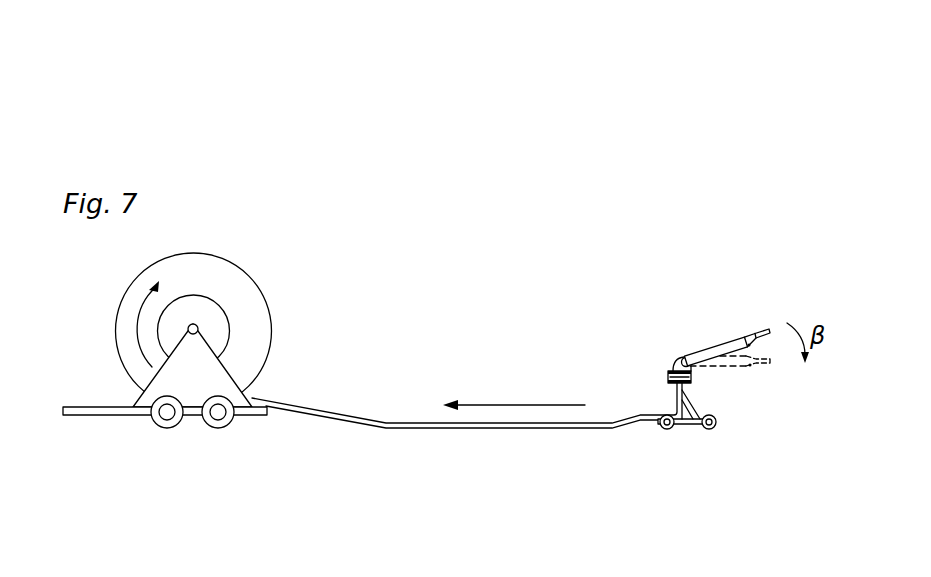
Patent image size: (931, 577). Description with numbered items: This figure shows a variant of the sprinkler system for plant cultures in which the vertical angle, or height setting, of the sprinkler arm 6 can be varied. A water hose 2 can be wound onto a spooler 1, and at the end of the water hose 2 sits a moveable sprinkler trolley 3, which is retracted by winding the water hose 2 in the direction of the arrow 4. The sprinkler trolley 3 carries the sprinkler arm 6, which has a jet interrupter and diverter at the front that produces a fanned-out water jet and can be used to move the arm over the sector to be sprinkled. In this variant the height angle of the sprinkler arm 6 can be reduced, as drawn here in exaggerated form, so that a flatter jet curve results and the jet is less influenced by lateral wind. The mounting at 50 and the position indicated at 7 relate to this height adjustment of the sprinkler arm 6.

The spooler 1 is at (237, 293).
The water hose 2 is at (343, 417).
The sprinkler trolley 3 is at (686, 441).
The arrow 4 is at (495, 403).
The sprinkler arm 6 is at (729, 344).
The arm in pivoted position 7 is at (733, 350).
The pivot joint 50 is at (682, 359).